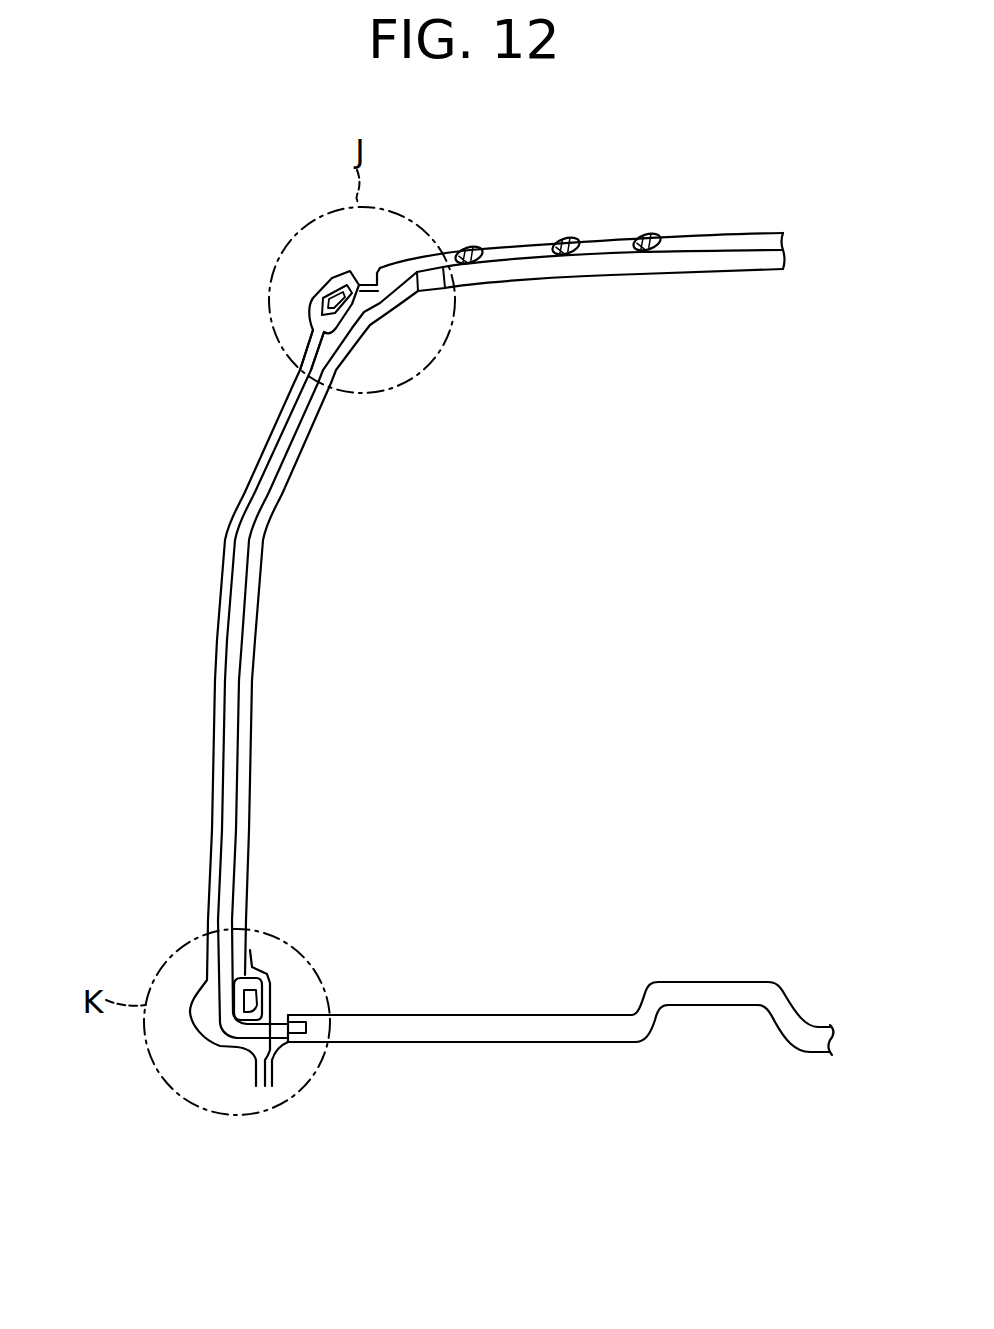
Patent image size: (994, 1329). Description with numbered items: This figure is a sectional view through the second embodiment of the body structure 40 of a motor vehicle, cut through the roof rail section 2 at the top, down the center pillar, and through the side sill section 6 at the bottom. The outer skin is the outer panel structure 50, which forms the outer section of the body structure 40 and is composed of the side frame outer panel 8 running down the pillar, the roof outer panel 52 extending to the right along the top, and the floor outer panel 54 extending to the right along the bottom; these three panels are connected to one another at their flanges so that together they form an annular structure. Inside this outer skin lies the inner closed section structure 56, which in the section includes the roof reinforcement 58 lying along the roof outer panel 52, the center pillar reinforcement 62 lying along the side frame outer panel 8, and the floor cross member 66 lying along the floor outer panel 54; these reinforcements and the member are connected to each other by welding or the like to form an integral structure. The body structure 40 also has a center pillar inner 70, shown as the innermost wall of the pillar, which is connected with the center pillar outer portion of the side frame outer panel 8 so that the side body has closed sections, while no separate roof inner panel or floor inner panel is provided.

The roof rail section 2 is at (290, 268).
The side sill section 6 is at (200, 1085).
The side frame outer panel 8 is at (213, 738).
The body structure 40 is at (190, 486).
The outer panel structure 50 is at (200, 603).
The roof outer panel 52 is at (700, 232).
The floor outer panel 54 is at (472, 1045).
The inner closed section structure 56 is at (295, 673).
The roof reinforcement 58 is at (660, 270).
The center pillar reinforcement 62 is at (228, 668).
The floor cross member 66 is at (557, 1027).
The center pillar inner 70 is at (252, 782).